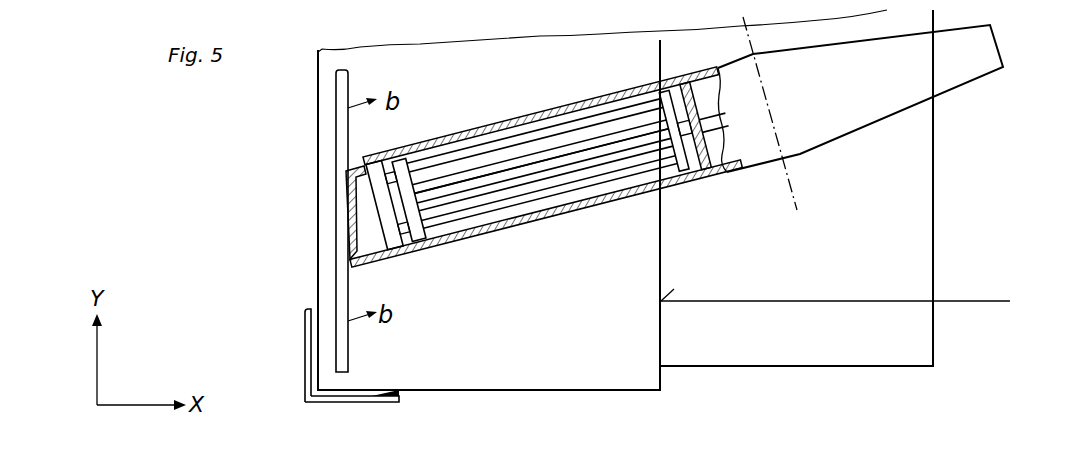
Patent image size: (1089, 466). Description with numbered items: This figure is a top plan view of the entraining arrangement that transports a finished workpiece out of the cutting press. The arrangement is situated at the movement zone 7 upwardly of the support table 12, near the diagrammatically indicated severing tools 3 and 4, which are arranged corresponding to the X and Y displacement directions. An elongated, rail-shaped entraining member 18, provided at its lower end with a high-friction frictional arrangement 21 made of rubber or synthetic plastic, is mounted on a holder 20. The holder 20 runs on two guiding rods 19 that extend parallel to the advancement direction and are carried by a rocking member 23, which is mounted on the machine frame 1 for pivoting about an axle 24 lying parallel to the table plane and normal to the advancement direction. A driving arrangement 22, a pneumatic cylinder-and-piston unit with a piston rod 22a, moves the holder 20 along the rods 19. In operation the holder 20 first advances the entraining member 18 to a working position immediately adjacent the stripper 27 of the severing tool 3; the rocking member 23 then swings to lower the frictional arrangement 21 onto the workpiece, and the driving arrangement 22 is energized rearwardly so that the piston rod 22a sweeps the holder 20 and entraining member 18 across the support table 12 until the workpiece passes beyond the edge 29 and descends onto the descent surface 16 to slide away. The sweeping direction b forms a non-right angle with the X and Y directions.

The machine base or frame 1 is at (575, 26).
The severing tool 3 is at (308, 341).
The severing tool 4 is at (400, 393).
The movement zone 7 is at (542, 394).
The support table 12 is at (643, 348).
The descent surface 16 is at (912, 252).
The entraining member 18 is at (342, 350).
The guiding rods 19 is at (497, 148).
The holder 20 is at (368, 255).
The frictional arrangement 21 is at (546, 133).
The driving arrangement 22 is at (717, 124).
The piston rod 22a is at (563, 158).
The rocking member 23 is at (497, 110).
The axle 24 is at (772, 112).
The stripper 27 is at (334, 129).
The edge 29 is at (851, 303).